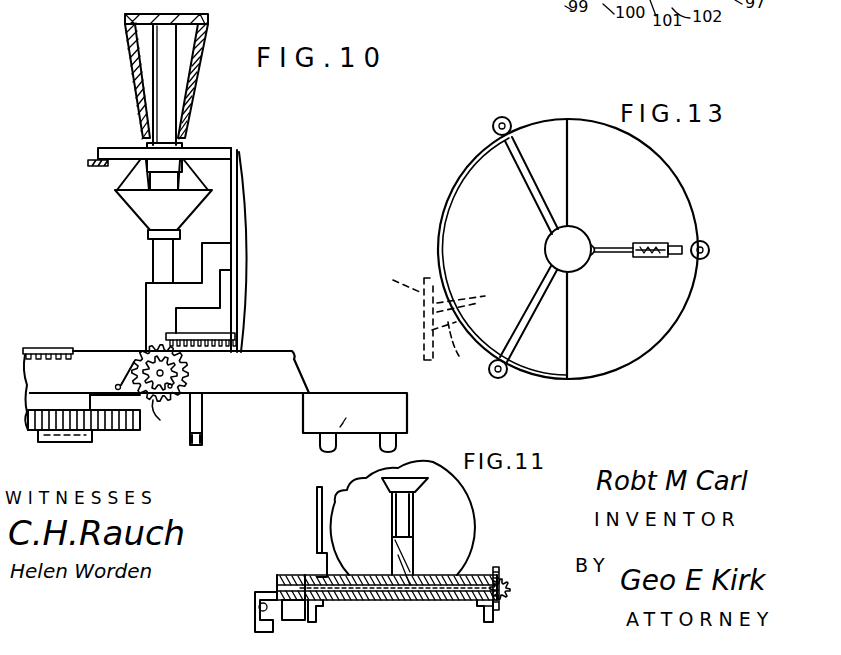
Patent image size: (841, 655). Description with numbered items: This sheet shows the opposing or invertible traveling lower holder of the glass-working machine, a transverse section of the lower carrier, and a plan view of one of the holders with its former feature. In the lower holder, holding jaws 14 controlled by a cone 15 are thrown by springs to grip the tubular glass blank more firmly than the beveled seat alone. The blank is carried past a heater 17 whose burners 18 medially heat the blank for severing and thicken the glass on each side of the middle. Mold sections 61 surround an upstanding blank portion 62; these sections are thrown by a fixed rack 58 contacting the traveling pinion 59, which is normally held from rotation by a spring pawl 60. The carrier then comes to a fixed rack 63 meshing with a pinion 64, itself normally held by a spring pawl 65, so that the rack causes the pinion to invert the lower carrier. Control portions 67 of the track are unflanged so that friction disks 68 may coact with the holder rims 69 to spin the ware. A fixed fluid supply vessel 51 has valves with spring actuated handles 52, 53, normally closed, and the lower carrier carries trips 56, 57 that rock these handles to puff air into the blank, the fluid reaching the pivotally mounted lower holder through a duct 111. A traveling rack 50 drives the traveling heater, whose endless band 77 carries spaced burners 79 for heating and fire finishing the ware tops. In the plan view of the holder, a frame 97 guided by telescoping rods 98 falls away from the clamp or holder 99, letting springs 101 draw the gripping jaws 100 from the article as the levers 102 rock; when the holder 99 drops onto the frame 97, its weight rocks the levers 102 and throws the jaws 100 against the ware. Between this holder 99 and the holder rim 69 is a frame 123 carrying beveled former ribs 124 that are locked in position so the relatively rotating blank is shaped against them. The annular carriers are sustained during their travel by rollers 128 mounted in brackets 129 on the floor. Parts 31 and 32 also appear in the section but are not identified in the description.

In FIG. 10, the holding jaws 14 is at (123, 175).
In FIG. 10, the cone 15 is at (128, 208).
In FIG. 11, the cone 15 is at (415, 482).
In FIG. 10, the heater 17 is at (99, 6).
In FIG. 10, the burners 18 is at (40, 2).
In FIG. 11, the bracket plate 31 is at (317, 568).
In FIG. 11, the vertical plate 32 is at (317, 525).
In FIG. 10, the traveling rack 50 is at (120, 432).
In FIG. 10, the fixed fluid supply vessel 51 is at (342, 393).
In FIG. 11, the fixed fluid supply vessel 51 is at (305, 620).
In FIG. 10, the spring actuated handle 52 is at (341, 447).
In FIG. 11, the spring actuated handle 52 is at (270, 616).
In FIG. 10, the spring actuated handle 53 is at (397, 448).
In FIG. 10, the trip 56 is at (203, 444).
In FIG. 11, the trip 56 is at (262, 628).
In FIG. 10, the trip 57 is at (82, 443).
In FIG. 10, the fixed rack 58 is at (45, 346).
In FIG. 10, the traveling pinion 59 is at (140, 358).
In FIG. 11, the traveling pinion 59 is at (508, 580).
In FIG. 10, the spring pawl 60 is at (156, 405).
In FIG. 10, the mold sections 61 is at (130, 60).
In FIG. 10, the upstanding blank portion 62 is at (186, 70).
In FIG. 10, the fixed rack 63 is at (210, 330).
In FIG. 10, the pinion 64 is at (190, 370).
In FIG. 11, the pinion 64 is at (496, 566).
In FIG. 10, the spring pawl 65 is at (126, 367).
In FIG. 10, the control portions of the track 67 is at (88, 163).
In FIG. 10, the friction disks 68 is at (246, 152).
In FIG. 11, the friction disks 68 is at (474, 508).
In FIG. 10, the holder rims 69 is at (230, 147).
In FIG. 13, the endless band 77 is at (423, 312).
In FIG. 13, the burners 79 is at (466, 346).
In FIG. 13, the frame 97 is at (706, 236).
In FIG. 13, the telescoping rods 98 is at (512, 120).
In FIG. 13, the holder 99 is at (658, 152).
In FIG. 13, the gripping jaws 100 is at (596, 246).
In FIG. 13, the springs 101 is at (648, 242).
In FIG. 13, the levers 102 is at (680, 256).
In FIG. 11, the duct 111 is at (368, 601).
In FIG. 13, the frame 123 is at (457, 185).
In FIG. 13, the former ribs 124 is at (540, 280).
In FIG. 11, the rollers 128 is at (316, 622).
In FIG. 11, the brackets 129 is at (324, 613).